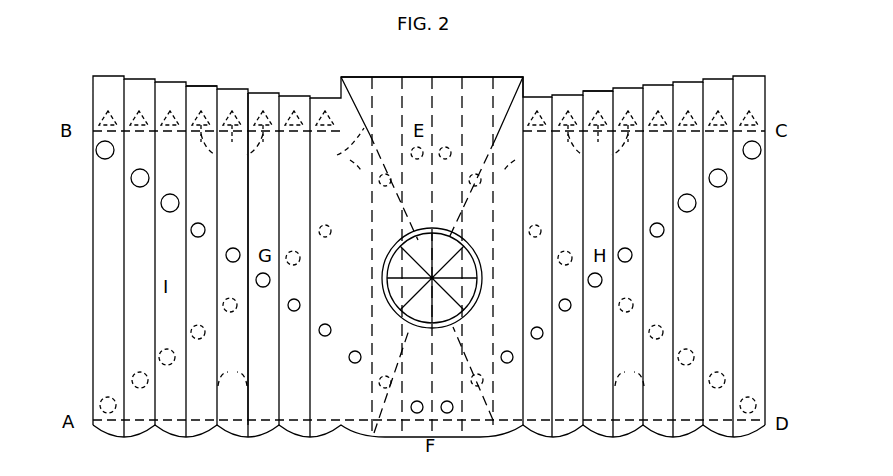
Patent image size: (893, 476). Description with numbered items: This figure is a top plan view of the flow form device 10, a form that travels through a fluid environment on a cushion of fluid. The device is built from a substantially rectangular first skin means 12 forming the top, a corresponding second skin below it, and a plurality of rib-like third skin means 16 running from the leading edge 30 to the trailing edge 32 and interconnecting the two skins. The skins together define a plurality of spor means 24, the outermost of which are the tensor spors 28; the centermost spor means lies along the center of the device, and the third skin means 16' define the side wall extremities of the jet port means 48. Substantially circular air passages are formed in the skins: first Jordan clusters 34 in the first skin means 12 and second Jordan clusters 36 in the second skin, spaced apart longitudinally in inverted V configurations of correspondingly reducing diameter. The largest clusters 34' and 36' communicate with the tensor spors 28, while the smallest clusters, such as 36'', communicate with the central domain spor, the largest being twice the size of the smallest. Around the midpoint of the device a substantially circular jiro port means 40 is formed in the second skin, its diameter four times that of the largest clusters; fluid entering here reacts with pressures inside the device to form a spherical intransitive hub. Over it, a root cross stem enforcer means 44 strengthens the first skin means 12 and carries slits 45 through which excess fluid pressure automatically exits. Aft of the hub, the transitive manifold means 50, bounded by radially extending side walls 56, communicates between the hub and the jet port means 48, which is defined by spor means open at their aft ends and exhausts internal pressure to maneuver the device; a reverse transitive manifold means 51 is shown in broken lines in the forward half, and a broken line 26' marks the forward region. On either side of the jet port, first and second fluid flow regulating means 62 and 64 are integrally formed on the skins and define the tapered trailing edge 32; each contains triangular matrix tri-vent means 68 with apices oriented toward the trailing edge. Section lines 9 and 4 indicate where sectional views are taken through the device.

The flow form device 10 is at (178, 52).
The first skin means 12 is at (276, 203).
The third skin means 16 is at (431, 387).
The third skin means defining side wall extremities of jet port means 16' is at (435, 175).
The spor means 24 is at (170, 243).
The bottom fold line 26' is at (429, 299).
The tensor spors 28 is at (105, 188).
The leading edge 30 is at (192, 438).
The trailing edge 32 is at (258, 92).
The first Jordan clusters 34 is at (429, 268).
The largest first Jordan clusters 34' is at (424, 303).
The second Jordan clusters 36 is at (428, 281).
The largest second Jordan clusters 36' is at (425, 397).
The smallest second Jordan clusters 36'' is at (429, 170).
The jiro port means 40 is at (478, 290).
The root cross stem enforcer means 44 is at (400, 263).
The slits 45 is at (458, 260).
The jet port means 48 is at (388, 92).
The transitive manifold means 50 is at (422, 210).
The reverse transitive manifold means 51 is at (422, 346).
The side walls 56 is at (463, 232).
The first fluid flow regulating means 62 is at (200, 74).
The second fluid flow regulating means 64 is at (575, 88).
The matrix tri-vent means 68 is at (414, 150).
The section line 9- 9 is at (132, 72).
The section line 4- 4 is at (686, 74).